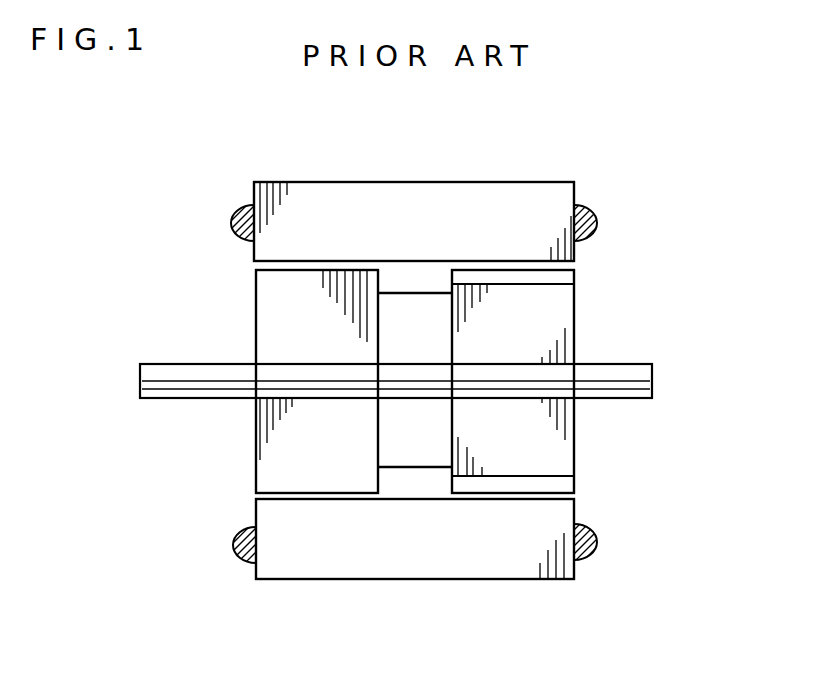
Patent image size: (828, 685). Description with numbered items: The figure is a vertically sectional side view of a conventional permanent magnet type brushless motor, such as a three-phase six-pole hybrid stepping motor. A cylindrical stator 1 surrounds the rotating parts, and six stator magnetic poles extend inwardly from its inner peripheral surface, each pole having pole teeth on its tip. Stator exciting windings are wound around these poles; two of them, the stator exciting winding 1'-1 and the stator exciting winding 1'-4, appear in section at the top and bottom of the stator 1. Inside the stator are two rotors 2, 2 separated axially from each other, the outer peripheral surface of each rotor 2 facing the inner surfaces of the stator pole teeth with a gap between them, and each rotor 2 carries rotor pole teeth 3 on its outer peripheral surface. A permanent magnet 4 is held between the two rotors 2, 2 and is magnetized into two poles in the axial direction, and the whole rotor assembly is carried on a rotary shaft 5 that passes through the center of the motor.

The cylindrical stator 1 is at (416, 341).
The stator exciting winding 1'-1 is at (461, 224).
The stator exciting winding 1'-4 is at (462, 545).
The rotor 2 is at (265, 471).
The rotor pole teeth 3 is at (562, 278).
The permanent magnet 4 is at (414, 465).
The rotary shaft 5 is at (652, 383).